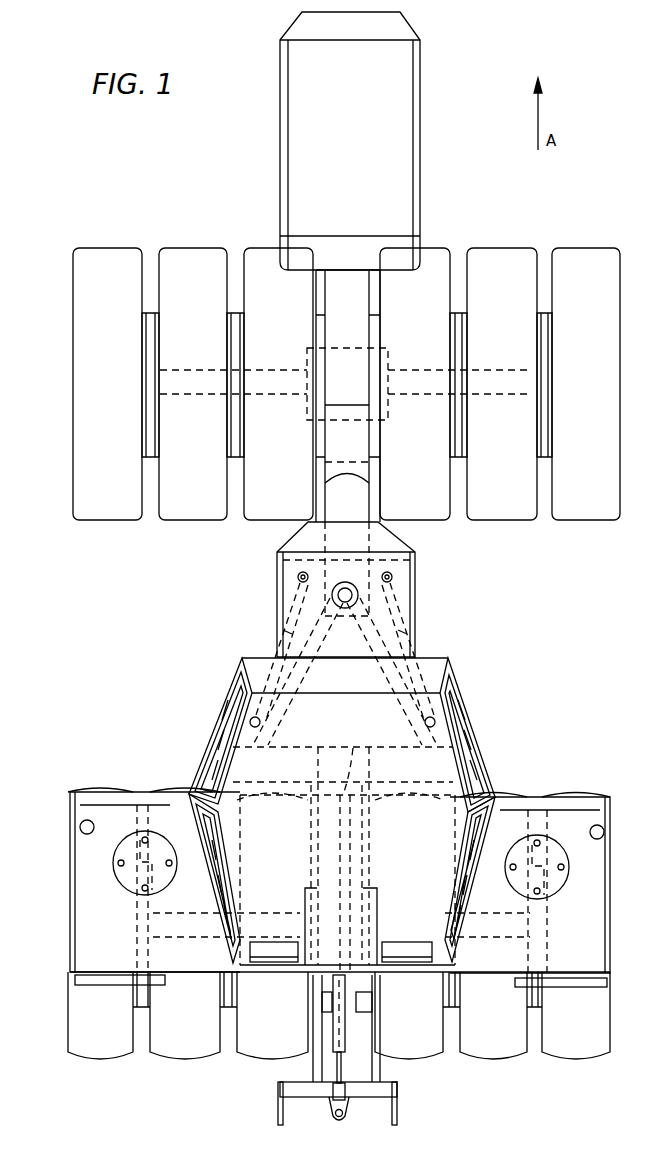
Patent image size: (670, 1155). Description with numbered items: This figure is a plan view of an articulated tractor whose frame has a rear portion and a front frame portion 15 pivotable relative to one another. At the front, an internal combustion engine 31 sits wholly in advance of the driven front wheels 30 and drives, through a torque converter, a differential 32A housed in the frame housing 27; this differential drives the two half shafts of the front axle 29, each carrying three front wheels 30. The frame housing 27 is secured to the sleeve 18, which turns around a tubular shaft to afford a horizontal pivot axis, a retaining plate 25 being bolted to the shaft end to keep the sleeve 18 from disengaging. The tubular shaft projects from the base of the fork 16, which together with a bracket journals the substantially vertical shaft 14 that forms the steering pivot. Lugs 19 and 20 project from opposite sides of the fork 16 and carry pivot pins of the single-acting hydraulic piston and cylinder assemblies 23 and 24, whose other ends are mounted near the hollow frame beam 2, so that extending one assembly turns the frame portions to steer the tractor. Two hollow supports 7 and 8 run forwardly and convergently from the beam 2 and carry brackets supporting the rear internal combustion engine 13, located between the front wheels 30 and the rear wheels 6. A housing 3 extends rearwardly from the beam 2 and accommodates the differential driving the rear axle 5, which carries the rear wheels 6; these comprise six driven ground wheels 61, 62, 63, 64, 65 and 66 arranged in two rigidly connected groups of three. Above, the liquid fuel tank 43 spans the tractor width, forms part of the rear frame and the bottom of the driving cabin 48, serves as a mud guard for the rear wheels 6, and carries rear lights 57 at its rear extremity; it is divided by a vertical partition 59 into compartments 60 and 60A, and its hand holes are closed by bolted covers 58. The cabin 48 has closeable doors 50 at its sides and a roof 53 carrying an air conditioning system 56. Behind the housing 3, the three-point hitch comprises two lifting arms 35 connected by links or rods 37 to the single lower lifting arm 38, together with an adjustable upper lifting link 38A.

The hollow frame beam 2 is at (308, 752).
The housing 3 is at (356, 750).
The rear axle 5 is at (176, 940).
The rear wheels 6 is at (323, 1030).
The hollow support 7 is at (298, 710).
The hollow support 8 is at (388, 712).
The internal combustion engine 13 is at (412, 596).
The vertical shaft 14 is at (333, 600).
The front frame portion 15 is at (372, 447).
The fork 16 is at (354, 560).
The sleeve 18 is at (330, 497).
The lugs 19 is at (292, 565).
The lugs 20 is at (405, 566).
The hydraulic piston and cylinder assembly 23 is at (264, 665).
The hydraulic piston and cylinder assembly 24 is at (432, 668).
The retaining plate 25 is at (356, 462).
The frame housing 27 is at (353, 280).
The front axle 29 is at (190, 396).
The front wheels 30 is at (118, 248).
The internal combustion engine 31 is at (410, 128).
The differential 32A is at (388, 353).
The lifting arms 35 is at (322, 996).
The links or rods 37 is at (322, 1018).
The lower lifting link or arm 38 is at (325, 1078).
The upper lifting link 38A is at (345, 1092).
The liquid fuel tank 43 is at (140, 792).
The driving cabin 48 is at (207, 718).
The closeable doors 50 is at (200, 760).
The roof 53 is at (440, 708).
The air conditioning system 56 is at (275, 966).
The rear lights 57 is at (95, 985).
The bolted covers 58 is at (130, 890).
The vertical partition 59 is at (352, 852).
The compartment 60 is at (90, 947).
The compartment 60A is at (596, 958).
The driven ground wheel 61 is at (100, 1062).
The driven ground wheel 62 is at (195, 1062).
The driven ground wheel 63 is at (264, 1062).
The driven ground wheel 64 is at (420, 1062).
The driven ground wheel 65 is at (500, 1062).
The driven ground wheel 66 is at (570, 1062).